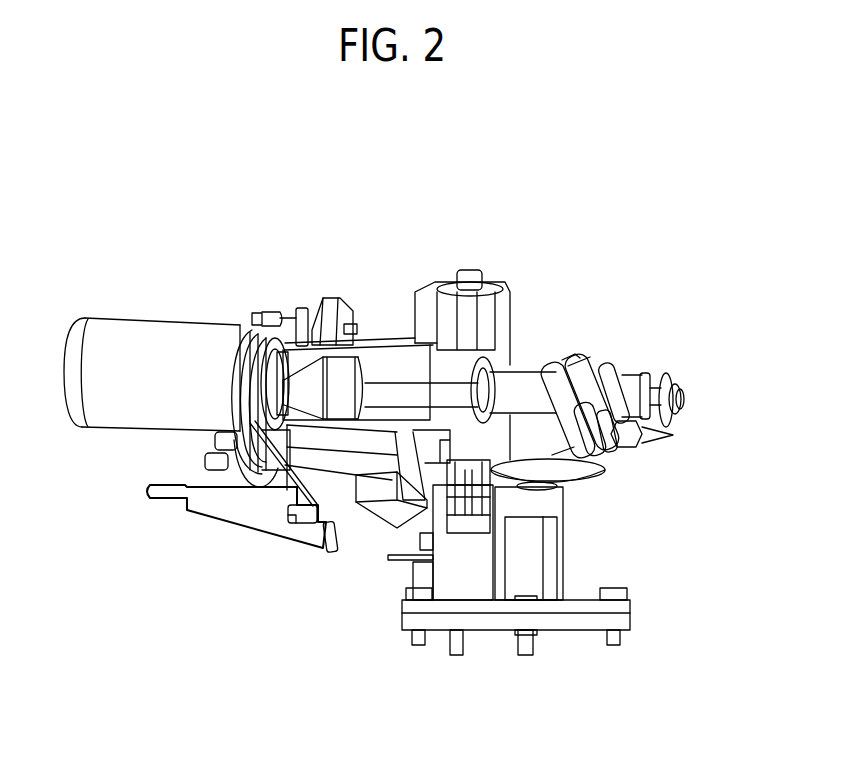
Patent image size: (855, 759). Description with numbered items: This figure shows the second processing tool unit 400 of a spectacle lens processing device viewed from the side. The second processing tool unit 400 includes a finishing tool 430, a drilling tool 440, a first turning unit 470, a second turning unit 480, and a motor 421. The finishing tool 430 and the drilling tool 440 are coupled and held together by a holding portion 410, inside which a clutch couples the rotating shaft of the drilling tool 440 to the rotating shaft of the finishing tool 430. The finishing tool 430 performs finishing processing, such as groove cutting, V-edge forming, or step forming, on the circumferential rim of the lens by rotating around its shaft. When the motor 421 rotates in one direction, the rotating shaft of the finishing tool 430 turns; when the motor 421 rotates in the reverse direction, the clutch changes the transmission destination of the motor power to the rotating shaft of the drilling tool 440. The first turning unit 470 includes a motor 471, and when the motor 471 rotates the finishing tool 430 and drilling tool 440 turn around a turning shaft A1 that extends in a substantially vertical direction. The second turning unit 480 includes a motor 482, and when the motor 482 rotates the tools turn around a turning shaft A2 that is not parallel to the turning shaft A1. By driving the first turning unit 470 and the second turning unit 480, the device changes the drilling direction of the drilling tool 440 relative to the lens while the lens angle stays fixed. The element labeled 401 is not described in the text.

The second processing tool unit 400 is at (222, 182).
The motor 421 is at (108, 355).
The holding portion 410 is at (607, 360).
The finishing tool 430 is at (665, 376).
The drilling tool 440 is at (672, 433).
The first turning unit 470 is at (545, 250).
The pedestal 401 is at (467, 580).
The motor 471 is at (527, 575).
The second turning unit 480 is at (250, 572).
The motor 482 is at (325, 498).
The turning shaft A1 is at (455, 278).
The turning shaft A2 is at (520, 372).